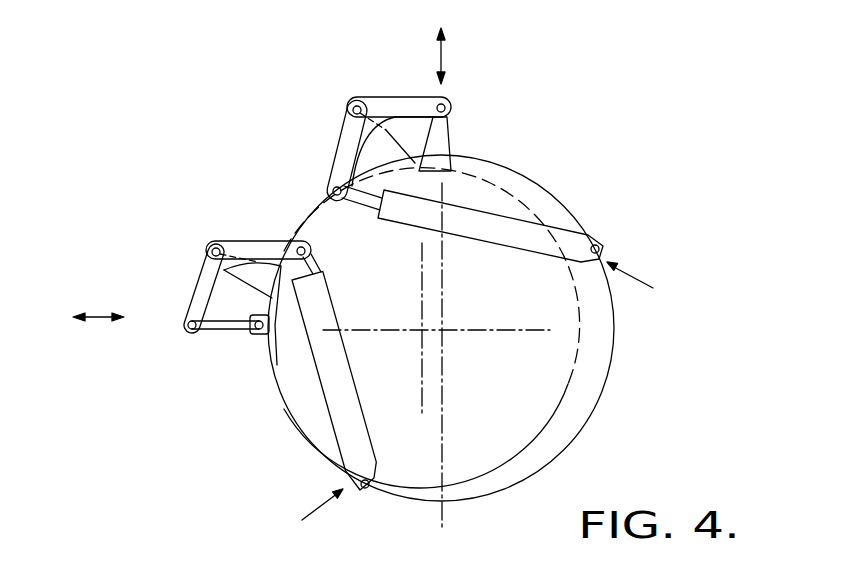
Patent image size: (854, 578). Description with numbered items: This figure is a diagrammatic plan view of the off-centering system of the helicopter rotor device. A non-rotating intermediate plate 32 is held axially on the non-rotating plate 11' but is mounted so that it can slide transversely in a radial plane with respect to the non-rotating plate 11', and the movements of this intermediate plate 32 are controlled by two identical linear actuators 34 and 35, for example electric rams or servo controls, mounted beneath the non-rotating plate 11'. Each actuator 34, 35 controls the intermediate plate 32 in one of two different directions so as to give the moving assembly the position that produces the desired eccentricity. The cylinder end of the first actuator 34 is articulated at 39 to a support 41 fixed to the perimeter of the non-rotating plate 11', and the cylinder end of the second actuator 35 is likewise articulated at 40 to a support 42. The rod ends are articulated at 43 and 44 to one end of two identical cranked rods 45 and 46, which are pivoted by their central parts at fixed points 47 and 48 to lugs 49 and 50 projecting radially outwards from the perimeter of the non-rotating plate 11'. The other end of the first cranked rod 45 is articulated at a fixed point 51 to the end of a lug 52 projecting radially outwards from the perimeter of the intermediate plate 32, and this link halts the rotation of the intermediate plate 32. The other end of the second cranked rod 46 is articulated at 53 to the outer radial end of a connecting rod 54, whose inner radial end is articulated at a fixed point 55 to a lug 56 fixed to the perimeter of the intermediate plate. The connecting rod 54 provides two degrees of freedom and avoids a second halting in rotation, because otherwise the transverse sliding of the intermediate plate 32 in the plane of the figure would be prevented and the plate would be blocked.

The non-rotating plate 11' is at (460, 328).
The intermediate plate 32 is at (568, 383).
The actuator 34 is at (532, 220).
The actuator 35 is at (347, 418).
The articulation of actuator body 39 is at (598, 240).
The articulation of actuator body 40 is at (367, 490).
The support 41 is at (647, 286).
The support 42 is at (304, 513).
The articulation of actuator rod 43 is at (332, 187).
The articulation of actuator rod 44 is at (303, 240).
The cranked rod 45 is at (342, 138).
The cranked rod 46 is at (200, 275).
The fixed point 47 is at (358, 105).
The fixed point 48 is at (215, 242).
The lug 49 is at (385, 145).
The lug 50 is at (259, 276).
The fixed point 51 is at (445, 103).
The lug 52 is at (441, 143).
The articulation 53 is at (187, 320).
The connecting rod 54 is at (217, 335).
The fixed point 55 is at (268, 348).
The lug 56 is at (255, 335).